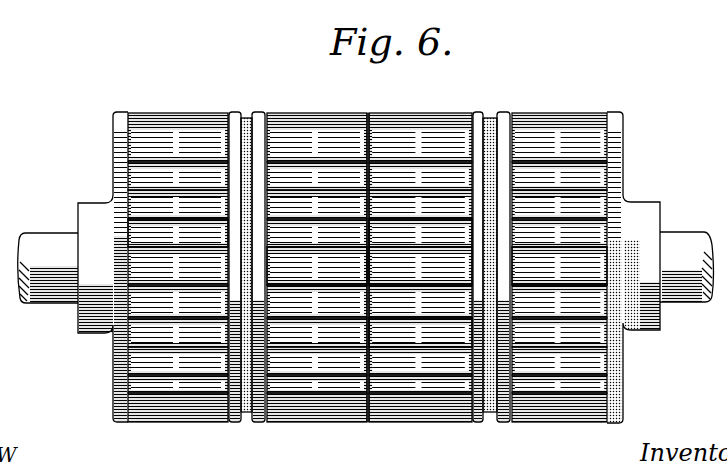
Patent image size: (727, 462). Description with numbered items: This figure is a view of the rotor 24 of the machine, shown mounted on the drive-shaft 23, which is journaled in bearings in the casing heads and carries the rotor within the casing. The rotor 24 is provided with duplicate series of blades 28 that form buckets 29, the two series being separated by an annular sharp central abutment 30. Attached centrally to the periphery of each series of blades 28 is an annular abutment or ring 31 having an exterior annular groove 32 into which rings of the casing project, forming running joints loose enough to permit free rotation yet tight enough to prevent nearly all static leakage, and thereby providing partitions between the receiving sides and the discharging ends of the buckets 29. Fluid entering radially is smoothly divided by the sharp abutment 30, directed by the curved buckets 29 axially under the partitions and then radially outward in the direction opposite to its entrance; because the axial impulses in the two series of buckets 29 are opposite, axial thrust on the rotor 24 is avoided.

The drive-shaft 23 is at (693, 224).
The rotor 24 is at (120, 178).
The blades 28 is at (185, 155).
The buckets 29 is at (367, 283).
The central abutment 30 is at (368, 269).
The annular abutment or ring 31 is at (261, 112).
The exterior annular groove 32 is at (245, 152).